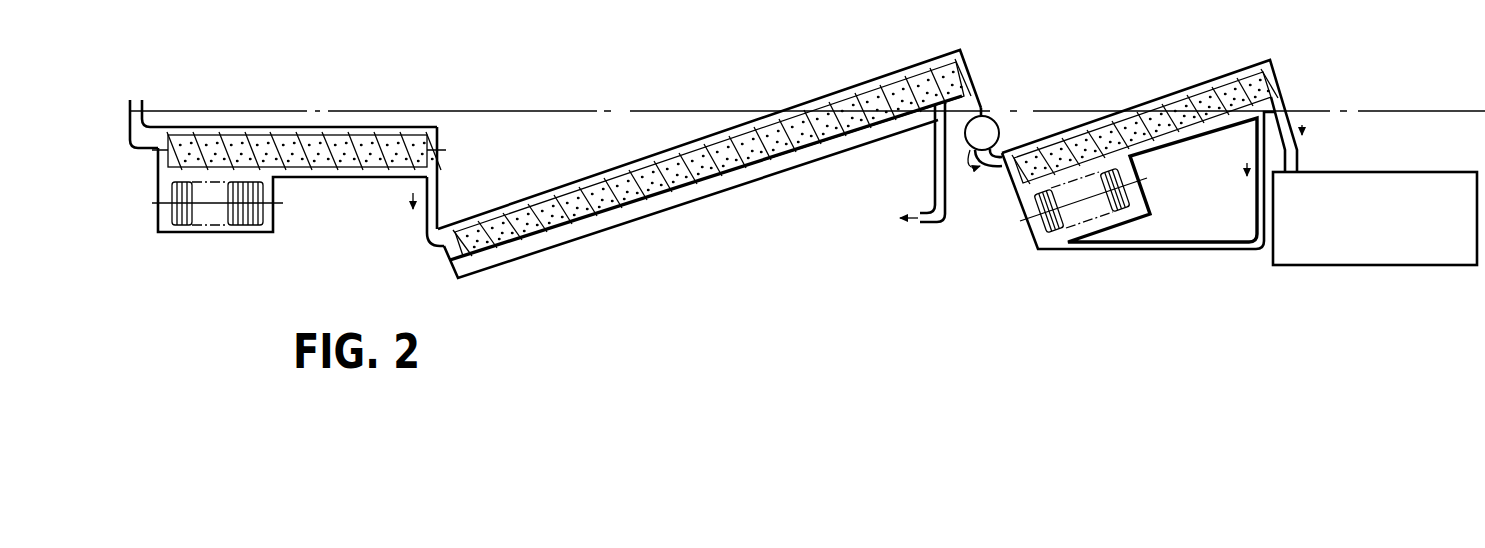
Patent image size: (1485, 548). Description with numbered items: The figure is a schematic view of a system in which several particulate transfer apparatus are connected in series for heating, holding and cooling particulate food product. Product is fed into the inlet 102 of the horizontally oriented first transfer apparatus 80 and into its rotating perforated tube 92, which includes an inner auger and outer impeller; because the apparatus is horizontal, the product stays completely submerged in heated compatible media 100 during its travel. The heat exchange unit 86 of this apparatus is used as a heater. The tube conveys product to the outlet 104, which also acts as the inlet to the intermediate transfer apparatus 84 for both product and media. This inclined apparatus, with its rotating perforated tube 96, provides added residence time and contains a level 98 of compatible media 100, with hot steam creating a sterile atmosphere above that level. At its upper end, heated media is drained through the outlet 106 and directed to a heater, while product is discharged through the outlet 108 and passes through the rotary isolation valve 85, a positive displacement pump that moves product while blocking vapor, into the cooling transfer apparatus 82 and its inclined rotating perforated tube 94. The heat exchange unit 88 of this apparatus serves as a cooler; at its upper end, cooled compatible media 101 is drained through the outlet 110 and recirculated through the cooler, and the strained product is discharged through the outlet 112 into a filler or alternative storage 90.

The first transfer apparatus 80 is at (290, 110).
The cooling transfer apparatus 82 is at (1152, 82).
The intermediate transfer apparatus 84 is at (714, 114).
The rotary isolation valve 85 is at (979, 178).
The heat exchange unit 86 is at (195, 242).
The heat exchange unit 88 is at (1026, 246).
The filler or alternative storage 90 is at (1446, 154).
The rotating perforated tube 92 is at (368, 135).
The rotating perforated tube 94 is at (1230, 75).
The rotating perforated tube 96 is at (922, 67).
The level of compatible media 98 is at (503, 111).
The compatible media 100 is at (218, 132).
The cooled compatible media 101 is at (1068, 130).
The inlet 102 is at (147, 122).
The outlet 104 is at (438, 207).
The outlet 106 is at (933, 175).
The outlet 108 is at (983, 103).
The outlet 110 is at (1253, 148).
The outlet 112 is at (1280, 108).